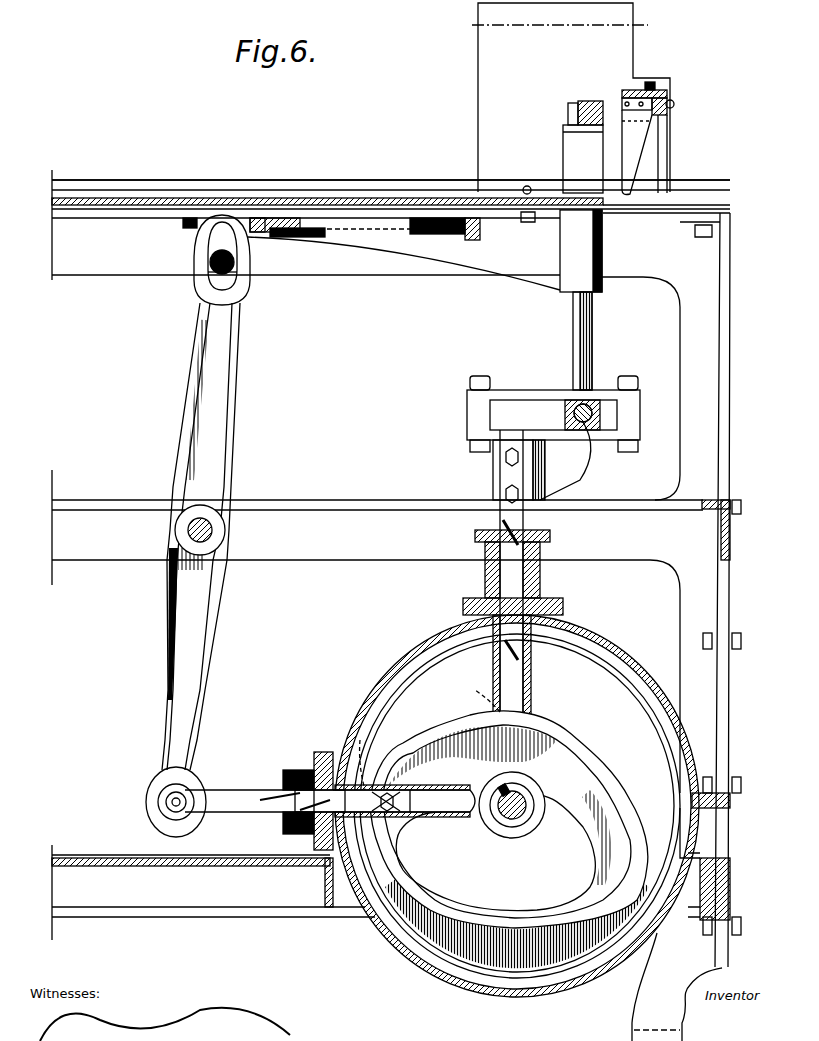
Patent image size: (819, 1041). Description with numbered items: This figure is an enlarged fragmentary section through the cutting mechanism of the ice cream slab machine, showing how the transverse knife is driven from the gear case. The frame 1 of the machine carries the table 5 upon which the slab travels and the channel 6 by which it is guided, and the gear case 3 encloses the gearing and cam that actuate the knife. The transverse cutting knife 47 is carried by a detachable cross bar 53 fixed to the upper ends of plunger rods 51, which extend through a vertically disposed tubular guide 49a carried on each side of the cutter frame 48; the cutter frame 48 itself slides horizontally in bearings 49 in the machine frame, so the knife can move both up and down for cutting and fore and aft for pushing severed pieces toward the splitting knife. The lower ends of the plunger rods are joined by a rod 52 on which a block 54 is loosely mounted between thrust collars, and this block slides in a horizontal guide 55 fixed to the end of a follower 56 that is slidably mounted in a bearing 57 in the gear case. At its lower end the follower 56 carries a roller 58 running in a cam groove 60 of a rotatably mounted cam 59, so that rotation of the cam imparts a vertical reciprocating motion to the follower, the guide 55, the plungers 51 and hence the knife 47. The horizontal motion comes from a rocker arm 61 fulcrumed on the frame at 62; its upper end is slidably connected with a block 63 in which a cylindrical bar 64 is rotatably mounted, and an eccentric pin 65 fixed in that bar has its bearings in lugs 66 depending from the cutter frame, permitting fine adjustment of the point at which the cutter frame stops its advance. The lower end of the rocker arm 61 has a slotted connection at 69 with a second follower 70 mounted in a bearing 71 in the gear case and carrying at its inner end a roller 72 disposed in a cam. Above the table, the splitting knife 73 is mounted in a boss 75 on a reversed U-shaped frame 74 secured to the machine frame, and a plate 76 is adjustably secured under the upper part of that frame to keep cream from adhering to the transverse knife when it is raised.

The frame 1 is at (700, 708).
The gear case 3 is at (398, 680).
The table 5 is at (437, 188).
The channel 6 is at (293, 192).
The knife 47 is at (585, 146).
The cutter frame 48 is at (415, 265).
The bearings 49 is at (340, 215).
The guide 49a is at (603, 255).
The plunger rods 51 is at (580, 332).
The rod 52 is at (600, 413).
The cross bar 53 is at (572, 112).
The block 54 is at (580, 480).
The horizontal guide 55 is at (500, 430).
The follower 56 is at (500, 652).
The bearing 57 is at (540, 587).
The roller 58 is at (540, 705).
The cam 59 is at (618, 790).
The cam groove 60 is at (573, 766).
The rocker arm 61 is at (222, 600).
The fulcrum 62 is at (210, 525).
The block 63 is at (206, 272).
The cylindrical bar 64 is at (210, 262).
The pin 65 is at (245, 262).
The lugs 66 is at (228, 232).
The slotted connection 69 is at (165, 785).
The follower 70 is at (230, 790).
The bearing 71 is at (320, 750).
The roller 72 is at (365, 790).
The splitting knife 73 is at (655, 142).
The reversed U-shaped frame 74 is at (662, 167).
The boss 75 is at (640, 90).
The plate 76 is at (675, 122).